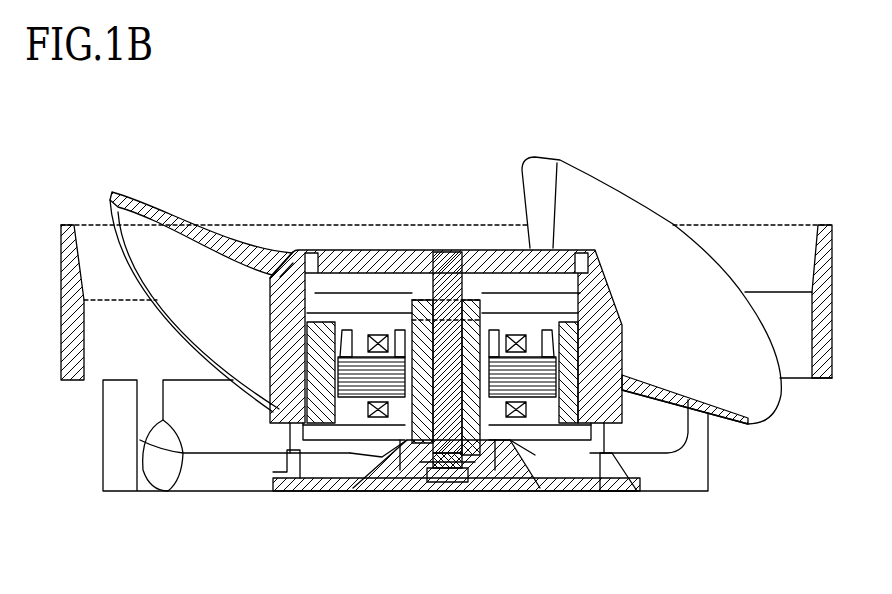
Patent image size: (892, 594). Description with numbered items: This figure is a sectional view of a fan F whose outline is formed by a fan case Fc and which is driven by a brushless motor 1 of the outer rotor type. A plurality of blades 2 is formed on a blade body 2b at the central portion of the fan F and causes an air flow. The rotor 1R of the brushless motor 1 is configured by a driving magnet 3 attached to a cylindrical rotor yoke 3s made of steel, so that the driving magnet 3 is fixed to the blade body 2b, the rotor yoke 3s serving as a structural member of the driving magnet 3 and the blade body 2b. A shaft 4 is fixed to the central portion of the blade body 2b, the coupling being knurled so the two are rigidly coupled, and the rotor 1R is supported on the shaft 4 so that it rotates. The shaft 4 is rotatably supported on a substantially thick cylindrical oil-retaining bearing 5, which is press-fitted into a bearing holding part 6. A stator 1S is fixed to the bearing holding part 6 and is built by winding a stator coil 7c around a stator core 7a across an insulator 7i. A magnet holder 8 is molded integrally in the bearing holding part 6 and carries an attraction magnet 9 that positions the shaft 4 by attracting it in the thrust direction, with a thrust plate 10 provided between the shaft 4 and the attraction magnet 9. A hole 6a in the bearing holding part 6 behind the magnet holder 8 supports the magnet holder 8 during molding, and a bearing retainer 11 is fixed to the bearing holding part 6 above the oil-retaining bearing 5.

The fan F is at (724, 126).
The fan case Fc is at (60, 240).
The brushless motor 1 is at (398, 300).
The rotor 1R is at (267, 227).
The stator 1S is at (558, 367).
The blades 2 is at (103, 198).
The blade body 2b is at (283, 252).
The driving magnet 3 is at (335, 455).
The cylindrical rotor yoke 3s is at (304, 458).
The shaft 4 is at (447, 280).
The oil-retaining bearing 5 is at (424, 295).
The bearing holding part 6 is at (513, 470).
The hole 6a is at (440, 485).
The stator core 7a is at (320, 318).
The stator coil 7c is at (383, 333).
The insulator 7i is at (365, 425).
The magnet holder 8 is at (432, 478).
The attraction magnet 9 is at (466, 480).
The thrust plate 10 is at (400, 470).
The bearing retainer 11 is at (470, 290).